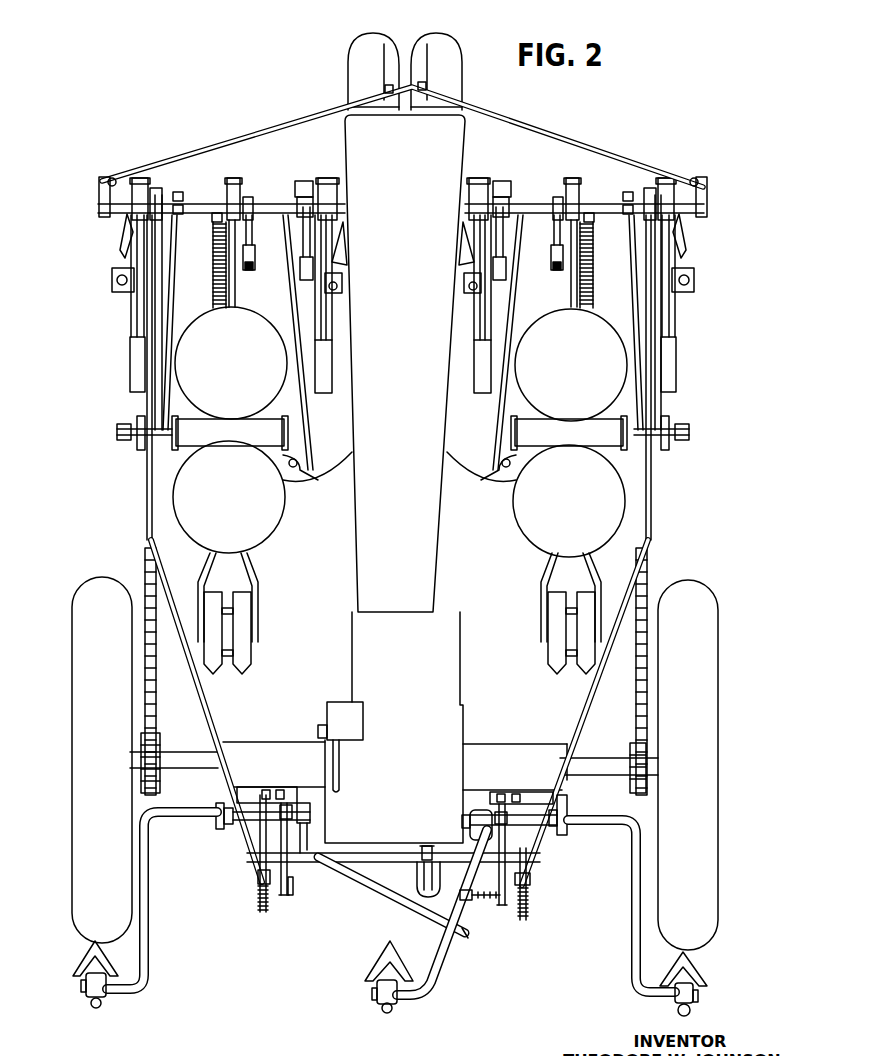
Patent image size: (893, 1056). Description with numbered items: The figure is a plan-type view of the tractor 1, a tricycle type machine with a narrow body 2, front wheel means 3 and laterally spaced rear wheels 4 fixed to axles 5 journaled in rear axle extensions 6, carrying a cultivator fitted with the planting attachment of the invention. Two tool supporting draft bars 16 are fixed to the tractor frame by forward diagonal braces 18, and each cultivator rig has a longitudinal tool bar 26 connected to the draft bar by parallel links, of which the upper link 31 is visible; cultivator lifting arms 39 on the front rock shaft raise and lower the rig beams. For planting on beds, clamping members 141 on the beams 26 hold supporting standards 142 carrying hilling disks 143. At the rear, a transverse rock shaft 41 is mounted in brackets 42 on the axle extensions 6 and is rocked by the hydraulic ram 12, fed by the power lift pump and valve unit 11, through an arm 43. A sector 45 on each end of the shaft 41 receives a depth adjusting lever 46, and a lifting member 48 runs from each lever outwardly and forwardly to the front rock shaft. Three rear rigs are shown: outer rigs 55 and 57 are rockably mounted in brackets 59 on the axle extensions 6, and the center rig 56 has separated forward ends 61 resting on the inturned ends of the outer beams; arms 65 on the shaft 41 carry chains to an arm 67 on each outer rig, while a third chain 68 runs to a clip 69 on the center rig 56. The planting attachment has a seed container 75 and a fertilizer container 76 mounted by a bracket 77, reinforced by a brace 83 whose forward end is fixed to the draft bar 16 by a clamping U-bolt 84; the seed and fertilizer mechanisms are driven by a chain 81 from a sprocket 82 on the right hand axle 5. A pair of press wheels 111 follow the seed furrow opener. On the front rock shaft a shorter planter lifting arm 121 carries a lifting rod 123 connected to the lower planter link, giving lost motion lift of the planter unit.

The tractor 1 is at (337, 577).
The narrow body 2 is at (428, 511).
The front wheel means 3 is at (430, 43).
The rear wheels 4 is at (83, 700).
The axles 5 is at (188, 764).
The rear axle extensions 6 is at (270, 750).
The power lift pump and valve unit 11 is at (340, 706).
The hydraulic ram 12 is at (413, 870).
The tool supporting draft bars 16 is at (300, 197).
The forward diagonal braces 18 is at (241, 137).
The tool bar 26 is at (136, 365).
The upper parallel link 31 is at (133, 318).
The cultivator lifting arms 39 is at (497, 251).
The transverse rock shaft 41 is at (317, 859).
The brackets 42 is at (257, 793).
The arm 43 is at (423, 850).
The sector 45 is at (260, 904).
The depth adjusting lever 46 is at (257, 881).
The lifting member 48 is at (209, 702).
The rear rig 55 is at (119, 990).
The center rig 56 is at (420, 994).
The rear rig 57 is at (650, 999).
The brackets 59 is at (217, 818).
The forward ends 61 is at (303, 839).
The arms 65 is at (281, 893).
The arm 67 is at (289, 879).
The third chain 68 is at (477, 901).
The clip 69 is at (430, 917).
The seed container 75 is at (279, 524).
The fertilizer container 76 is at (191, 321).
The bracket 77 is at (328, 476).
The chain 81 is at (145, 631).
The sprocket 82 is at (141, 772).
The brace 83 is at (162, 397).
The clamping U-bolt 84 is at (180, 194).
The press wheels 111 is at (560, 673).
The planter lifting arm 121 is at (252, 222).
The link 123 is at (249, 270).
The clamping members 141 is at (113, 280).
The supporting standard 142 is at (115, 291).
The hilling disk 143 is at (125, 233).